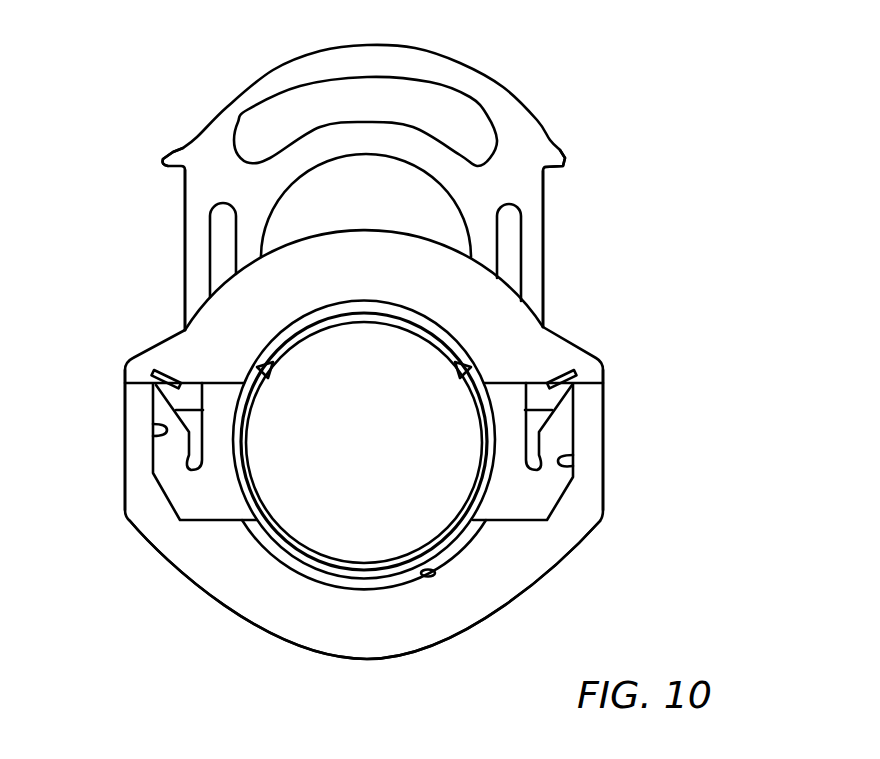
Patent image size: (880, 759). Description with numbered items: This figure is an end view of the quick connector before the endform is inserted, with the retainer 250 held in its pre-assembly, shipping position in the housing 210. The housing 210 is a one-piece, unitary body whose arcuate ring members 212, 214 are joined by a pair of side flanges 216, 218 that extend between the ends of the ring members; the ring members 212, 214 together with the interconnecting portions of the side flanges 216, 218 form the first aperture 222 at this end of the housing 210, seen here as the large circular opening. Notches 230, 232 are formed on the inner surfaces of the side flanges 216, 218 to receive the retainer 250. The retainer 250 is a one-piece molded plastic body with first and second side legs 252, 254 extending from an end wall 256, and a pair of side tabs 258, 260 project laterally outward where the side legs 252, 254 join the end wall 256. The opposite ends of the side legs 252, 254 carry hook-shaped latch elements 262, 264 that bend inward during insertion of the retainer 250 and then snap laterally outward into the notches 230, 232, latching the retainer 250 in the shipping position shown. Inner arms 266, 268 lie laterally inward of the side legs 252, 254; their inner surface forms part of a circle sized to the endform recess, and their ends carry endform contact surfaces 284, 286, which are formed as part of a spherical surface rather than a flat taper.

The housing 210 is at (160, 330).
The arcuate ring member 212 is at (503, 320).
The arcuate ring member 214 is at (545, 565).
The side flange 216 is at (125, 492).
The side flange 218 is at (603, 416).
The first aperture 222 is at (440, 568).
The notch 230 is at (153, 432).
The notch 232 is at (573, 463).
The retainer 250 is at (548, 50).
The first side leg 252 is at (187, 203).
The second side leg 254 is at (542, 240).
The end wall 256 is at (275, 72).
The side tab 258 is at (168, 157).
The side tab 260 is at (565, 162).
The latch element 262 is at (153, 381).
The latch element 264 is at (580, 383).
The inner arm 266 is at (243, 247).
The inner arm 268 is at (487, 230).
The endform contact surface 284 is at (265, 369).
The endform contact surface 286 is at (463, 372).